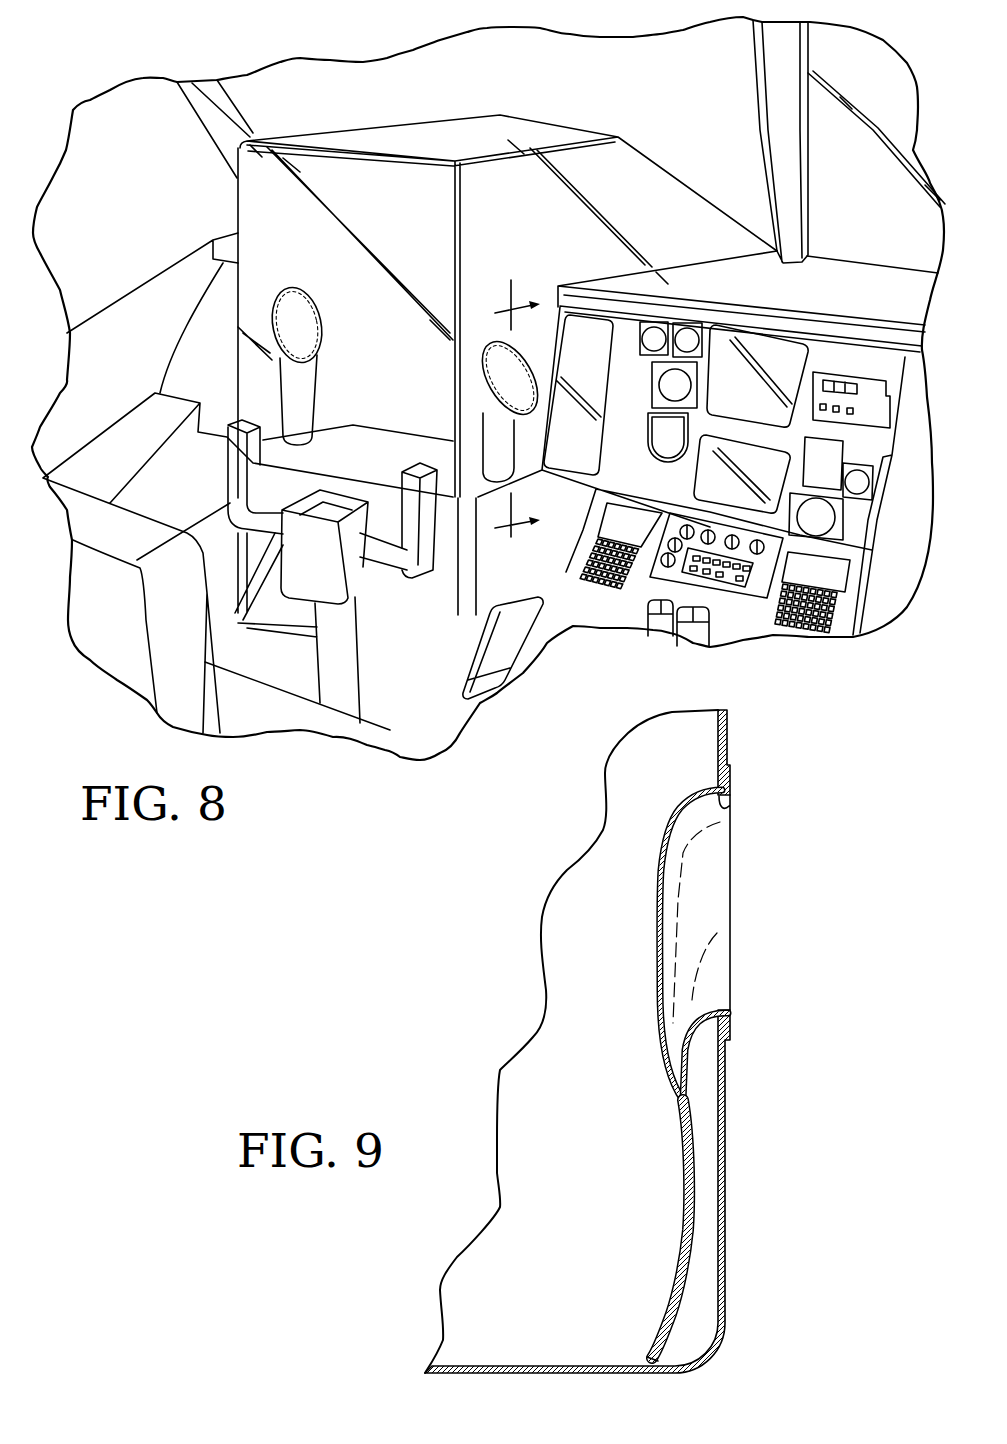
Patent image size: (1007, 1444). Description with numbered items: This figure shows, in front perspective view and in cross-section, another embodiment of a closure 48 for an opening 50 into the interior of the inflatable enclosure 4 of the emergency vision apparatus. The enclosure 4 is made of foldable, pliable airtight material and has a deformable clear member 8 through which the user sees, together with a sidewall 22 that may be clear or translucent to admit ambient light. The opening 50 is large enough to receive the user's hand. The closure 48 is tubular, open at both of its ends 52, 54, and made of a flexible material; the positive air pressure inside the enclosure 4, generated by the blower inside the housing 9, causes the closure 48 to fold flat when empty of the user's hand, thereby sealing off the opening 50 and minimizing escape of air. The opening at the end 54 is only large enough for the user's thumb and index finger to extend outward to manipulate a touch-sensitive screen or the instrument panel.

In FIG. 8, the inflatable enclosure 4 is at (359, 127).
In FIG. 8, the clear member 8 is at (374, 210).
In FIG. 8, the sidewall 22 is at (660, 211).
In FIG. 9, the sidewall 22 is at (727, 1200).
In FIG. 8, the closure 48 is at (293, 283).
In FIG. 9, the closure 48 is at (700, 1115).
In FIG. 8, the housing 9 is at (517, 416).
In FIG. 9, the opening 50 is at (724, 803).
In FIG. 9, the end 52 is at (702, 920).
In FIG. 9, the end 54 is at (661, 1311).